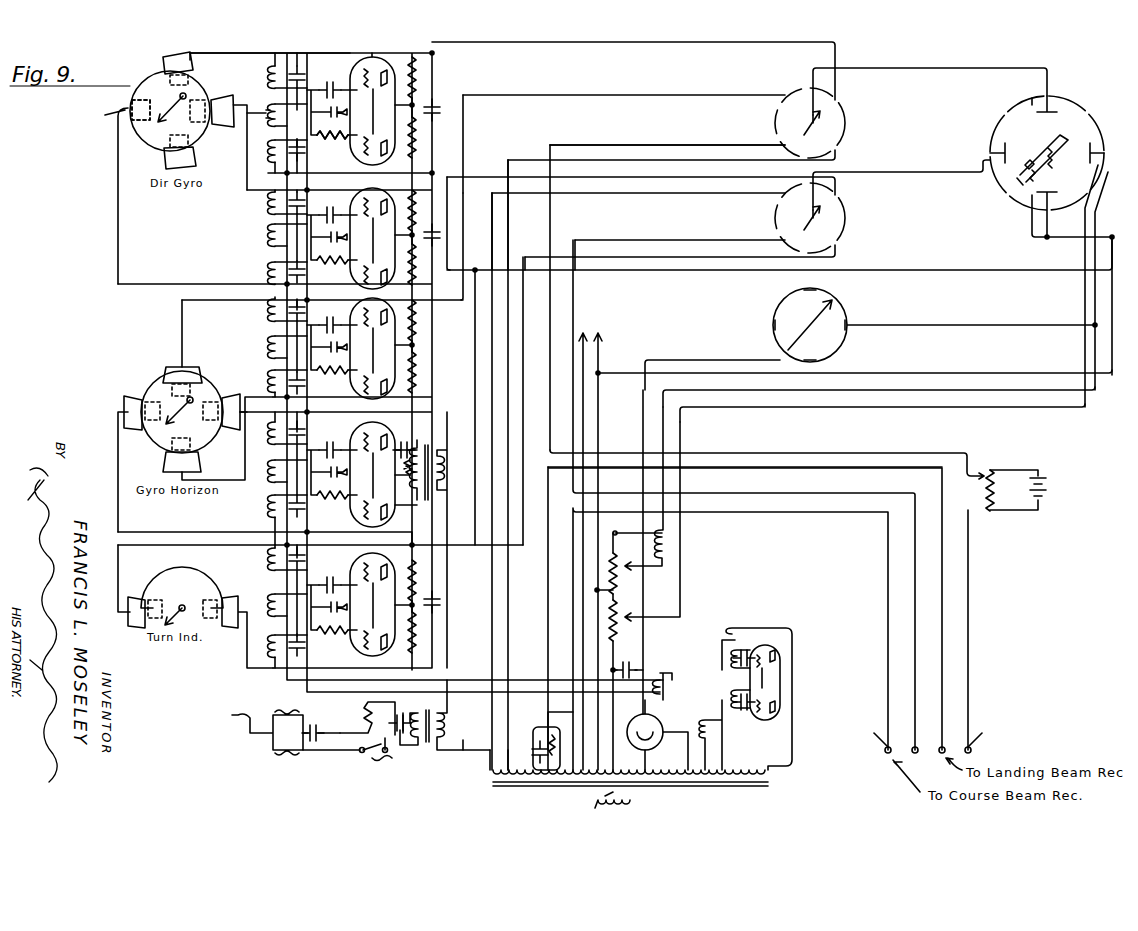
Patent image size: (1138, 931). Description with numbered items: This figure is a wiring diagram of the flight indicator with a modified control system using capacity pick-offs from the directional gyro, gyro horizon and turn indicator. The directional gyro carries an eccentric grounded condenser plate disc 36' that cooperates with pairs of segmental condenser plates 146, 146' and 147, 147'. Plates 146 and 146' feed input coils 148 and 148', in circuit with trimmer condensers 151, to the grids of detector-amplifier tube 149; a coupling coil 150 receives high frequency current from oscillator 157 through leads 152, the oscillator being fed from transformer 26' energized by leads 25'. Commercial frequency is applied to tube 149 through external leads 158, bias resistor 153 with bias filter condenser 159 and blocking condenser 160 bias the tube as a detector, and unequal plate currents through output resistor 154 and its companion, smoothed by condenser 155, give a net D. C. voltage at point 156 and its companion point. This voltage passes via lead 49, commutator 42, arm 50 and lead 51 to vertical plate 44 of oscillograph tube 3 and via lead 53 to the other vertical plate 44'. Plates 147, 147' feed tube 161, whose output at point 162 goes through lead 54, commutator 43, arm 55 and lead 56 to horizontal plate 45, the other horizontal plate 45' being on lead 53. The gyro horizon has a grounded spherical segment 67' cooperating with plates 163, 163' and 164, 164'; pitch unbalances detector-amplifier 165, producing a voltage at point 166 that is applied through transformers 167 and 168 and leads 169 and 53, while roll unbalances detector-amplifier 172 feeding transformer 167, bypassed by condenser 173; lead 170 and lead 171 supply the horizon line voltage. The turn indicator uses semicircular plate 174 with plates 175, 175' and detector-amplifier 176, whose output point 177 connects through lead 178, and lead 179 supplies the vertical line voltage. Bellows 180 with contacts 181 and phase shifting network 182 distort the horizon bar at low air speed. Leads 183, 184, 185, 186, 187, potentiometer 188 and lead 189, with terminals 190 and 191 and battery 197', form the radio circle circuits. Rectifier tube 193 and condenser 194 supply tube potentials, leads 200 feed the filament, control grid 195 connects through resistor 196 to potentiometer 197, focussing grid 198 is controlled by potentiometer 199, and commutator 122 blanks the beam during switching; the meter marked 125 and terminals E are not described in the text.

The grounded condenser plate disc 36' is at (157, 162).
The segmental condenser plate 146 is at (251, 57).
The segmental condenser plate 146' is at (162, 158).
The segmental condenser plate 147 is at (116, 121).
The segmental condenser plate 147' is at (227, 128).
The input coil 148 is at (265, 59).
The input coil 148' is at (259, 156).
The detector-amplifier or balanced modulator tube 149 is at (372, 57).
The coupling coil 150 is at (274, 108).
The trimmer condensers 151 is at (302, 60).
The leads 152 is at (342, 640).
The bias resistor 153 is at (336, 136).
The output resistor 154 is at (420, 80).
The smoothing condenser 155 is at (445, 112).
The output point 156 is at (432, 57).
The oscillator 157 is at (765, 699).
The external leads 158 is at (371, 111).
The bias filter condenser 159 is at (332, 101).
The blocking condenser 160 is at (288, 116).
The detector-amplifier tube 161 is at (374, 201).
The output point 162 is at (366, 296).
The segmental condenser plate 163 is at (164, 348).
The segmental condenser plate 163' is at (218, 438).
The segmental condenser plate 164 is at (123, 457).
The segmental condenser plate 164' is at (231, 398).
The thermionic detector-amplifier 165 is at (410, 358).
The output point 166 is at (416, 310).
The transformer 167 is at (436, 484).
The transformer 168 is at (445, 720).
The lead 169 is at (468, 750).
The lead 170 is at (492, 220).
The lead 171 is at (516, 742).
The thermionic detector-amplifier 172 is at (332, 478).
The condenser 173 is at (412, 446).
The grounded semicircular condenser plate 174 is at (196, 582).
The segmental condenser plate 175 is at (128, 606).
The segmental condenser plate 175' is at (238, 632).
The thermionic detector-amplifier 176 is at (352, 570).
The output point 177 is at (418, 520).
The lead 178 is at (580, 240).
The lead 179 is at (475, 590).
The bellows 180 is at (267, 746).
The contacts 181 is at (346, 732).
The phase shifting condenser and resistance network 182 is at (364, 718).
The lead 183 is at (522, 770).
The lead 184 is at (573, 576).
The lead 185 is at (745, 478).
The lead 186 is at (548, 636).
The lead 187 is at (968, 656).
The potentiometer 188 is at (990, 468).
The lead 189 is at (864, 454).
The terminals 190 is at (888, 748).
The terminals 191 is at (968, 748).
The rectifier tube 193 is at (654, 726).
The condenser 194 is at (636, 666).
The control grid 195 is at (1052, 140).
The resistor 196 is at (668, 532).
The potentiometer 197 is at (621, 568).
The battery 197' is at (1056, 474).
The focussing grid 198 is at (1012, 190).
The potentiometer 199 is at (629, 682).
The leads 200 is at (598, 358).
The oscillograph tube 3 is at (998, 108).
The leads 25' is at (620, 802).
The transformer 26' is at (649, 779).
The commutator 42 is at (825, 120).
The commutator 43 is at (825, 218).
The vertical deflecting plate 44 is at (1055, 84).
The vertical deflecting plate 44' is at (1073, 286).
The horizontal deflecting plate 45 is at (981, 143).
The horizontal deflecting plate 45' is at (1110, 143).
The lead 49 is at (614, 44).
The arm 50 is at (815, 129).
The lead 51 is at (925, 66).
The lead 53 is at (630, 271).
The lead 54 is at (644, 186).
The arm 55 is at (815, 224).
The lead 56 is at (927, 172).
The grounded spherical segment condenser plate 67' is at (172, 422).
The commutator 122 is at (786, 325).
The meter pointer 125 is at (810, 325).
The terminal E is at (830, 294).